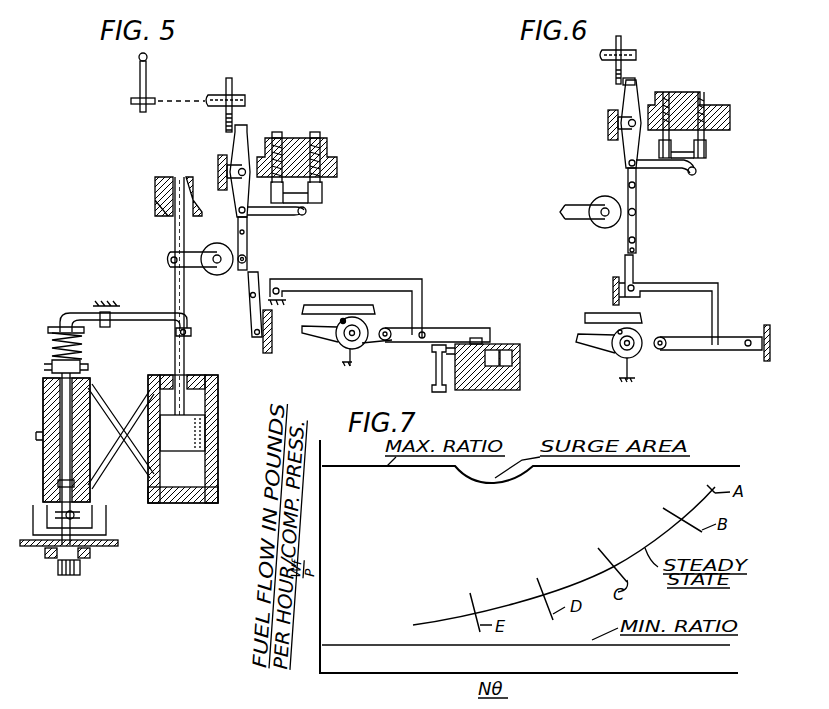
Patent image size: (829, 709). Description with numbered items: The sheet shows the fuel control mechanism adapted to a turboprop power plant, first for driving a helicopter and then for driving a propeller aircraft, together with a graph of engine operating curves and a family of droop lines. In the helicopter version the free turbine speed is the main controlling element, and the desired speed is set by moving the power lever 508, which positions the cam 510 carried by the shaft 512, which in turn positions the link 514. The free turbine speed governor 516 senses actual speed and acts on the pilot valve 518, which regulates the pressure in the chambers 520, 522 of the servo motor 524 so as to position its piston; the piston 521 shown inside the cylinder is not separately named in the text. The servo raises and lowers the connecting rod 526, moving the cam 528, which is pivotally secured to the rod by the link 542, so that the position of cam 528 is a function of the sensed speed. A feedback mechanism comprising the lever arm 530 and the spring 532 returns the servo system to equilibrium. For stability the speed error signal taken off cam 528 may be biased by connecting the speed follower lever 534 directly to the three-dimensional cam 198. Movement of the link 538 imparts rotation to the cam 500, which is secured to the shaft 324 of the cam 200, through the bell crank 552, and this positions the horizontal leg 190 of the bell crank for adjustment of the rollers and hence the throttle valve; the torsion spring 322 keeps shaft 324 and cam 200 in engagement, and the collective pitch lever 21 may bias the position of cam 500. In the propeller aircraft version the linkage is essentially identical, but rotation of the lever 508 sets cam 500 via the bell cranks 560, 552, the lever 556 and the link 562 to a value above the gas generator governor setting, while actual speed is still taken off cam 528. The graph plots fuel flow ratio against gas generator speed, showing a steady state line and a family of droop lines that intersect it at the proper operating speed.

In FIG. 5, the power lever 508 is at (150, 67).
In FIG. 5, the cam 510 is at (232, 80).
In FIG. 6, the cam 510 is at (621, 38).
In FIG. 5, the shaft 512 is at (245, 98).
In FIG. 6, the shaft 512 is at (636, 54).
In FIG. 5, the link 514 is at (248, 130).
In FIG. 6, the link 514 is at (638, 86).
In FIG. 5, the free turbine speed governor 516 is at (113, 553).
In FIG. 5, the pilot valve 518 is at (42, 374).
In FIG. 5, the chamber 520 is at (182, 483).
In FIG. 5, the servo piston 521 is at (205, 425).
In FIG. 5, the chamber 522 is at (190, 385).
In FIG. 5, the servo motor 524 is at (219, 470).
In FIG. 5, the connecting rod 526 is at (185, 306).
In FIG. 5, the cam 528 is at (207, 243).
In FIG. 6, the cam 528 is at (604, 195).
In FIG. 5, the lever arm 530 is at (150, 292).
In FIG. 5, the spring 532 is at (80, 346).
In FIG. 5, the speed follower lever 534 is at (250, 320).
In FIG. 5, the link 538 is at (248, 243).
In FIG. 5, the link 542 is at (168, 262).
In FIG. 5, the bell crank 552 is at (372, 281).
In FIG. 6, the bell crank 552 is at (700, 285).
In FIG. 5, the lever 556 is at (470, 328).
In FIG. 6, the lever 556 is at (740, 337).
In FIG. 5, the bell crank 560 is at (306, 213).
In FIG. 6, the bell crank 560 is at (692, 175).
In FIG. 6, the link 562 is at (637, 220).
In FIG. 5, the horizontal leg 190 is at (318, 305).
In FIG. 6, the horizontal leg 190 is at (596, 312).
In FIG. 5, the three-dimensional cam 198 is at (268, 353).
In FIG. 5, the cam 200 is at (336, 340).
In FIG. 6, the cam 200 is at (612, 350).
In FIG. 5, the torsion spring 322 is at (352, 362).
In FIG. 6, the torsion spring 322 is at (629, 372).
In FIG. 5, the shaft 324 is at (357, 330).
In FIG. 5, the cam 500 is at (386, 343).
In FIG. 6, the cam 500 is at (664, 350).
In FIG. 5, the collective pitch lever 21 is at (430, 374).